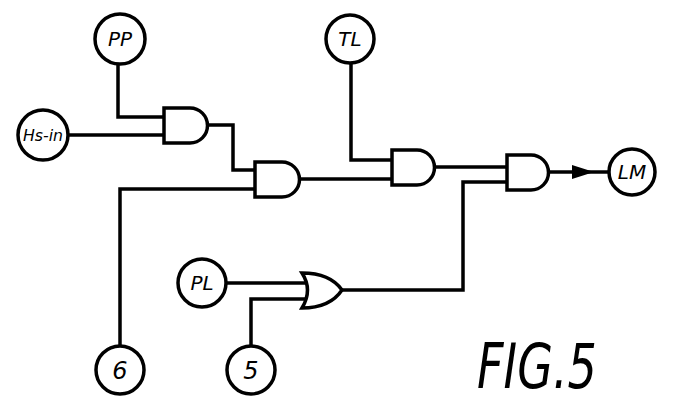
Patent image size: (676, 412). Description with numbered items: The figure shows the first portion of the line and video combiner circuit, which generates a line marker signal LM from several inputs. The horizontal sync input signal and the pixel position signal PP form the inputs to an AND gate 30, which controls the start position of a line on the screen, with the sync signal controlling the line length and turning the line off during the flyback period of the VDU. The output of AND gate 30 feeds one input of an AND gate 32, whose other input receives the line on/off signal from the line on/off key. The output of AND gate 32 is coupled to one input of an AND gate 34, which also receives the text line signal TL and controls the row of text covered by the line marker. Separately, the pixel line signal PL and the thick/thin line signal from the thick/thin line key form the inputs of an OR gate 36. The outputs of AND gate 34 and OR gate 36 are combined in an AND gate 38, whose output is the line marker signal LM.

The AND gate 30 is at (193, 108).
The AND gate 32 is at (282, 162).
The AND gate 34 is at (417, 150).
The OR gate 36 is at (325, 275).
The AND gate 38 is at (532, 155).